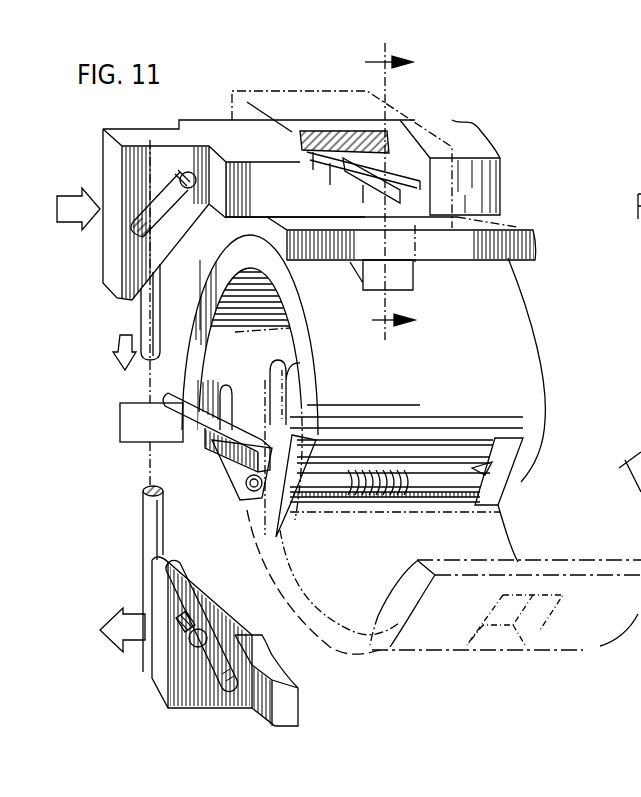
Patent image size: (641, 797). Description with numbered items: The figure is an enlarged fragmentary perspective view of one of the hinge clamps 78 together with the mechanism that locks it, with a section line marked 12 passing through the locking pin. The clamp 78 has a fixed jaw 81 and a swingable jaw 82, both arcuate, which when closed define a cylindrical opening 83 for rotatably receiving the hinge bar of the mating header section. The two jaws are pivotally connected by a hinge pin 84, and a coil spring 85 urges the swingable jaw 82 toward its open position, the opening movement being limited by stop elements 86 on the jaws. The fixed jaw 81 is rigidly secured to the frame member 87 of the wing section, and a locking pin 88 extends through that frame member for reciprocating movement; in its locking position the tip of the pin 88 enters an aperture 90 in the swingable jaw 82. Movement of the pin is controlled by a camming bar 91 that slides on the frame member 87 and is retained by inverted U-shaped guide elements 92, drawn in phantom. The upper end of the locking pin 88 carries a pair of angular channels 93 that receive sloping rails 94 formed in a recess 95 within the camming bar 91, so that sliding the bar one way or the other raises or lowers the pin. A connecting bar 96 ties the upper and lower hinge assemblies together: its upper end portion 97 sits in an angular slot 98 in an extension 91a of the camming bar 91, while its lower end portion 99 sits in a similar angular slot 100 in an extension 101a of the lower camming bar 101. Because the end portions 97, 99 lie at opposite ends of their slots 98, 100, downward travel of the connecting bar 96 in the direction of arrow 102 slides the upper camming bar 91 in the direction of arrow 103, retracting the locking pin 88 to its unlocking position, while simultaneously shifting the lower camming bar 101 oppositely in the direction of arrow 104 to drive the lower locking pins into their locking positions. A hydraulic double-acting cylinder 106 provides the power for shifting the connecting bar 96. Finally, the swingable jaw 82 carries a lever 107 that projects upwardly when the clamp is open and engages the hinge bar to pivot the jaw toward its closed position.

The section line 12- 12 is at (374, 191).
The hinge clamp 78 is at (535, 302).
The fixed jaw 81 is at (207, 284).
The swingable jaw 82 is at (292, 290).
The cylindrical opening 83 is at (235, 332).
The hinge pin 84 is at (251, 495).
The coil spring 85 is at (394, 470).
The stop elements 86 is at (230, 478).
The frame member 87 is at (510, 224).
The locking pin 88 is at (380, 158).
The aperture 90 is at (500, 612).
The camming bar 91 is at (215, 130).
The extension 91a is at (107, 158).
The guide elements 92 is at (272, 86).
The angular channels 93 is at (380, 192).
The sloping rails 94 is at (330, 165).
The recess 95 is at (310, 177).
The connecting bar 96 is at (143, 518).
The upper end portion 97 is at (182, 170).
The angular slot 98 is at (133, 240).
The lower end portion 99 is at (185, 612).
The angular slot 100 is at (207, 652).
The lower camming bar 101 is at (283, 702).
The extension 101a is at (157, 673).
The arrow 102 is at (118, 344).
The arrow 103 is at (73, 203).
The arrow 104 is at (115, 619).
The hydraulic double-acting cylinder 106 is at (120, 423).
The lever 107 is at (227, 395).